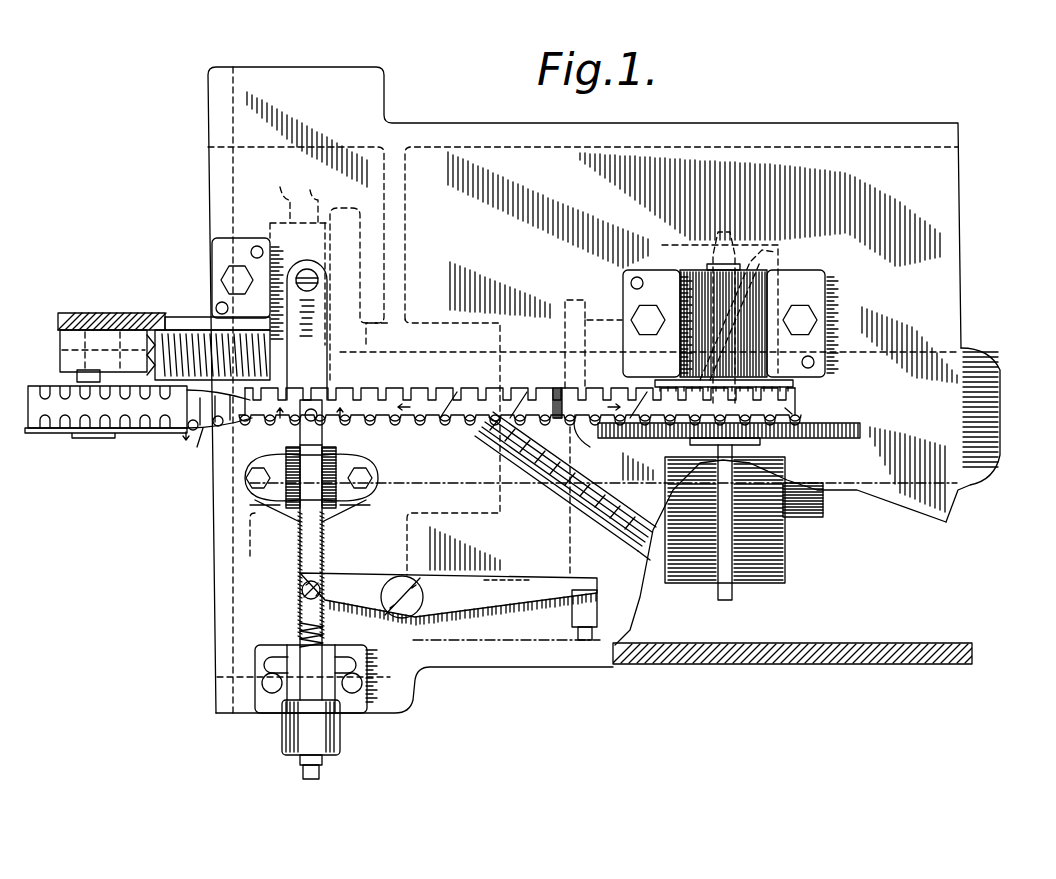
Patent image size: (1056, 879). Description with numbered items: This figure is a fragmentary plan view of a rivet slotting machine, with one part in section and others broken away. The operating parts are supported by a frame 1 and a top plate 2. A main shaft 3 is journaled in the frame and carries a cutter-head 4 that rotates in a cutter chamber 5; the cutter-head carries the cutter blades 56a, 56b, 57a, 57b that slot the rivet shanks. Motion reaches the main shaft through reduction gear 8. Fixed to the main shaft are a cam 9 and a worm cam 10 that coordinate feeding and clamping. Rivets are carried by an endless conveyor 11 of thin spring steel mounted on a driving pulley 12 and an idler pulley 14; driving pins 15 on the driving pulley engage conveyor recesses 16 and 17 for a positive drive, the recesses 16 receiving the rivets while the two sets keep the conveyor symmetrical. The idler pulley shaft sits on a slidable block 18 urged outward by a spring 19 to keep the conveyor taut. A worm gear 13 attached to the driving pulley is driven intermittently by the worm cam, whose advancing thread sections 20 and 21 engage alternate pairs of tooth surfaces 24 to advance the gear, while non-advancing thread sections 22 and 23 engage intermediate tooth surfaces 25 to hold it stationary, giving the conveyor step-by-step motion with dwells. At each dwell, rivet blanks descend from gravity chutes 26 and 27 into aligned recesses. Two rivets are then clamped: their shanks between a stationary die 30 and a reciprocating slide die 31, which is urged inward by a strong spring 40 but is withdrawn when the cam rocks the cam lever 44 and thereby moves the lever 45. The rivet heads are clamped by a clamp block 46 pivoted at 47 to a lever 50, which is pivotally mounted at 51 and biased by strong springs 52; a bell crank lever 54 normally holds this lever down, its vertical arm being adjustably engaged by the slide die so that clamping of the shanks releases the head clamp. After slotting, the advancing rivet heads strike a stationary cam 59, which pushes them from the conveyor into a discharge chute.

The frame 1 is at (407, 270).
The top plate 2 is at (947, 510).
The main shaft 3 is at (995, 367).
The cutter-head 4 is at (344, 247).
The cutter chamber 5 is at (366, 175).
The reduction gear 8 is at (314, 403).
The cam 9 is at (578, 300).
The worm cam 10 is at (736, 248).
The endless conveyor 11 is at (520, 395).
The driving pulley 12 is at (795, 385).
The worm gear 13 is at (835, 423).
The idler pulley 14 is at (53, 432).
The driving pins 15 is at (802, 403).
The conveyor recesses 16 is at (595, 440).
The conveyor recesses 17 is at (525, 395).
The slidable block 18 is at (118, 331).
The spring 19 is at (182, 330).
The advancing thread section 20 is at (778, 258).
The advancing thread section 21 is at (760, 585).
The non-advancing thread section 22 is at (725, 598).
The non-advancing thread section 23 is at (720, 232).
The tooth surfaces 24 is at (777, 440).
The tooth surfaces 25 is at (845, 438).
The gravity chute 26 is at (628, 544).
The gravity chute 27 is at (640, 523).
The die 30 is at (327, 398).
The die 31 is at (327, 438).
The spring 40 is at (311, 600).
The cam lever 44 is at (573, 563).
The lever 45 is at (448, 599).
The clamp block 46 is at (215, 462).
The pivot 47 is at (343, 305).
The lever 50 is at (313, 460).
The pivot 51 is at (280, 502).
The springs 52 is at (333, 660).
The bell crank lever 54 is at (325, 750).
The cutter blade 56a is at (327, 557).
The cutter blade 56b is at (293, 563).
The cutter blade 57a is at (320, 193).
The cutter blade 57b is at (269, 193).
The stationary cam 59 is at (200, 440).